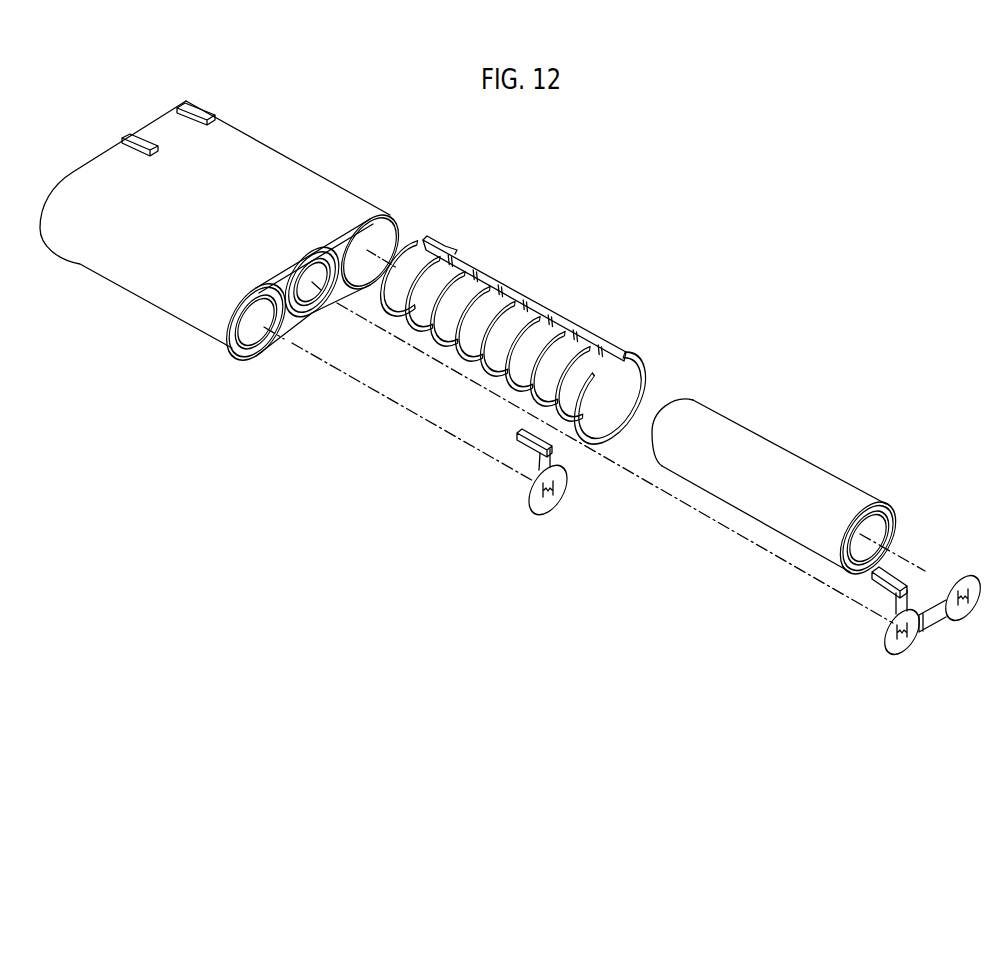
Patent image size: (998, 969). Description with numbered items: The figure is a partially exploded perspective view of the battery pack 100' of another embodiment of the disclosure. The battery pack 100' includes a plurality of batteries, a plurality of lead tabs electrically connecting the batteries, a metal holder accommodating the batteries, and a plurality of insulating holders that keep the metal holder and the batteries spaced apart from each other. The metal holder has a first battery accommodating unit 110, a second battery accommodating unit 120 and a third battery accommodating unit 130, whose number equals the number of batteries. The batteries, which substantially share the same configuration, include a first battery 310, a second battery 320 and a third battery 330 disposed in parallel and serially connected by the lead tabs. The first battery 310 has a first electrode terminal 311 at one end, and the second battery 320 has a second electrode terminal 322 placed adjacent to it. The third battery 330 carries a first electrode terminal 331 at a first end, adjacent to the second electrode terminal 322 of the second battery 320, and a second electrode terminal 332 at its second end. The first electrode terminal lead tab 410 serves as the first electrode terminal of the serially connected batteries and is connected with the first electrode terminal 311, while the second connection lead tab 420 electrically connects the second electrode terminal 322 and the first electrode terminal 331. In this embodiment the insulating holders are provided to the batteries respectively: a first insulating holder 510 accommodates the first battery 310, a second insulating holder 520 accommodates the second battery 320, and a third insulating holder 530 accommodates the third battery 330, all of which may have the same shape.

The battery pack 100' is at (510, 413).
The first battery accommodating unit 110 is at (148, 297).
The second battery accommodating unit 120 is at (290, 328).
The third battery accommodating unit 130 is at (389, 218).
The first battery 310 is at (350, 376).
The first electrode terminal of the first battery 311 is at (241, 354).
The second battery 320 is at (589, 429).
The second electrode terminal of the second battery 322 is at (316, 320).
The third battery 330 is at (788, 463).
The first electrode terminal of the third battery 331 is at (891, 520).
The second electrode terminal of the third battery 332 is at (674, 401).
The first electrode terminal lead tab 410 is at (533, 517).
The second connection lead tab 420 is at (896, 661).
The first insulating holder 510 is at (241, 366).
The second insulating holder 520 is at (303, 333).
The third insulating holder 530 is at (556, 294).